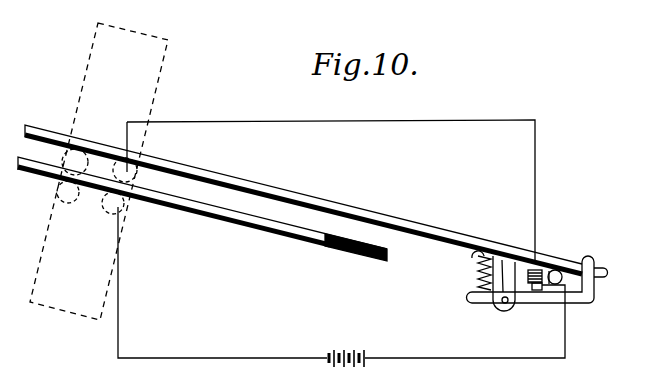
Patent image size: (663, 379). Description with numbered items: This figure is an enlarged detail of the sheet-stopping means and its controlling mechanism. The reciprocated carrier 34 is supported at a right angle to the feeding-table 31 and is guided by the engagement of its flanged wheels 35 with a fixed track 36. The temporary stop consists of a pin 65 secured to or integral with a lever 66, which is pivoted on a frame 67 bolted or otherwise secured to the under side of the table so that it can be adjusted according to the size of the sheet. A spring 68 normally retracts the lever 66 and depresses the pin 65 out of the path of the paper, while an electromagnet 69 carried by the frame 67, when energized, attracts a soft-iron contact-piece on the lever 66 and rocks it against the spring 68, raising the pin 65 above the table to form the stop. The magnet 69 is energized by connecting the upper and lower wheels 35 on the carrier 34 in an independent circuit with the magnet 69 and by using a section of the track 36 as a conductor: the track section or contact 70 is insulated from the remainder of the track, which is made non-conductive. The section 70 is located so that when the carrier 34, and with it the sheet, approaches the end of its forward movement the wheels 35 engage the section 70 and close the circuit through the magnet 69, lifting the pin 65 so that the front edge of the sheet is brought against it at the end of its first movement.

The feeding-table 31 is at (290, 193).
The carrier 34 is at (46, 240).
The flanged wheels 35 is at (131, 172).
The fixed track 36 is at (216, 212).
The pin 65 is at (598, 265).
The lever 66 is at (574, 300).
The frame 67 is at (506, 268).
The spring 68 is at (477, 271).
The electromagnet 69 is at (540, 272).
The track section 70 is at (345, 247).